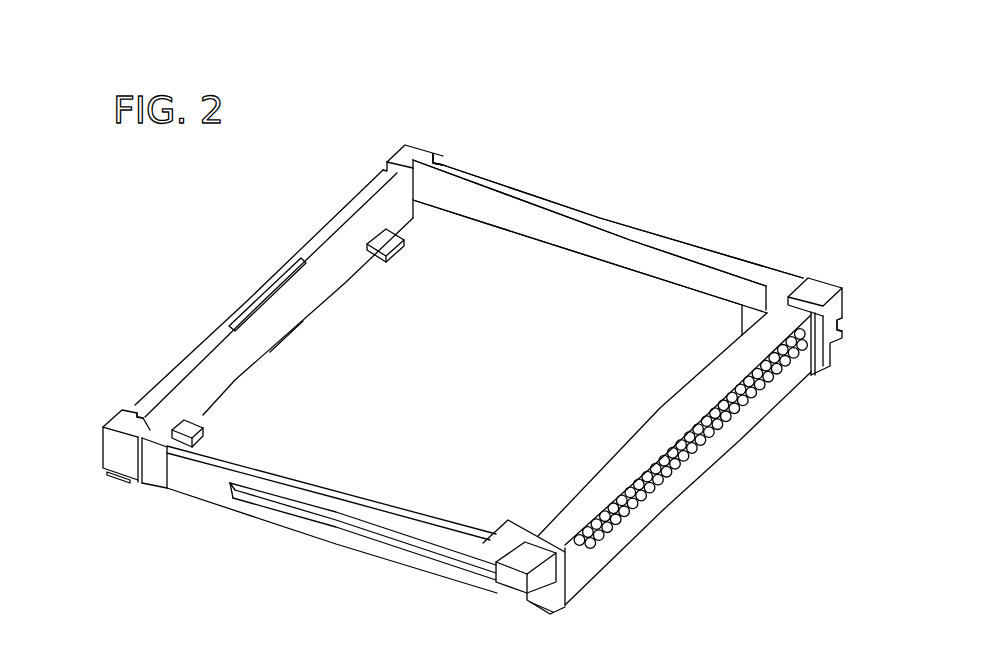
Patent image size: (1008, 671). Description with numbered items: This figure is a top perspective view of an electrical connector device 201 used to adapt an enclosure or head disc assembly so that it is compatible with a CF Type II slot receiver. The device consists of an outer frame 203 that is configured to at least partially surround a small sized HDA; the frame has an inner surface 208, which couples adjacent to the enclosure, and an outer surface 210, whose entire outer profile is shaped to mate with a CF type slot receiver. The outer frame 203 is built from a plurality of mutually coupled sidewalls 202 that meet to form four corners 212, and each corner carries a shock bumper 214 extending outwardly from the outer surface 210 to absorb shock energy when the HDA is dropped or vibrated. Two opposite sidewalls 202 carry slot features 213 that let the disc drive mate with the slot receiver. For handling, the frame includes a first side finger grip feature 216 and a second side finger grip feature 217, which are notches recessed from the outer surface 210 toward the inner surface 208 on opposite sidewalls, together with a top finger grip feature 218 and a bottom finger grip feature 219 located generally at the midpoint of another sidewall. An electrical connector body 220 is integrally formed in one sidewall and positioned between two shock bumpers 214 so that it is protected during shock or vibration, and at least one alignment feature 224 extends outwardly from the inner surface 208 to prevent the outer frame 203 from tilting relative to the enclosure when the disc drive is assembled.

The electrical connector device 201 is at (624, 96).
The sidewalls 202 is at (600, 228).
The outer frame 203 is at (549, 195).
The inner surface 208 is at (504, 218).
The outer surface 210 is at (650, 226).
The corners 212 is at (392, 148).
The slot features 213 is at (359, 542).
The shock bumpers 214 is at (414, 152).
The first side finger grip feature 216 is at (148, 485).
The second side finger grip feature 217 is at (457, 158).
The top finger grip feature 218 is at (272, 289).
The bottom finger grip feature 219 is at (297, 333).
The electrical connector body 220 is at (694, 469).
The alignment feature 224 is at (392, 250).